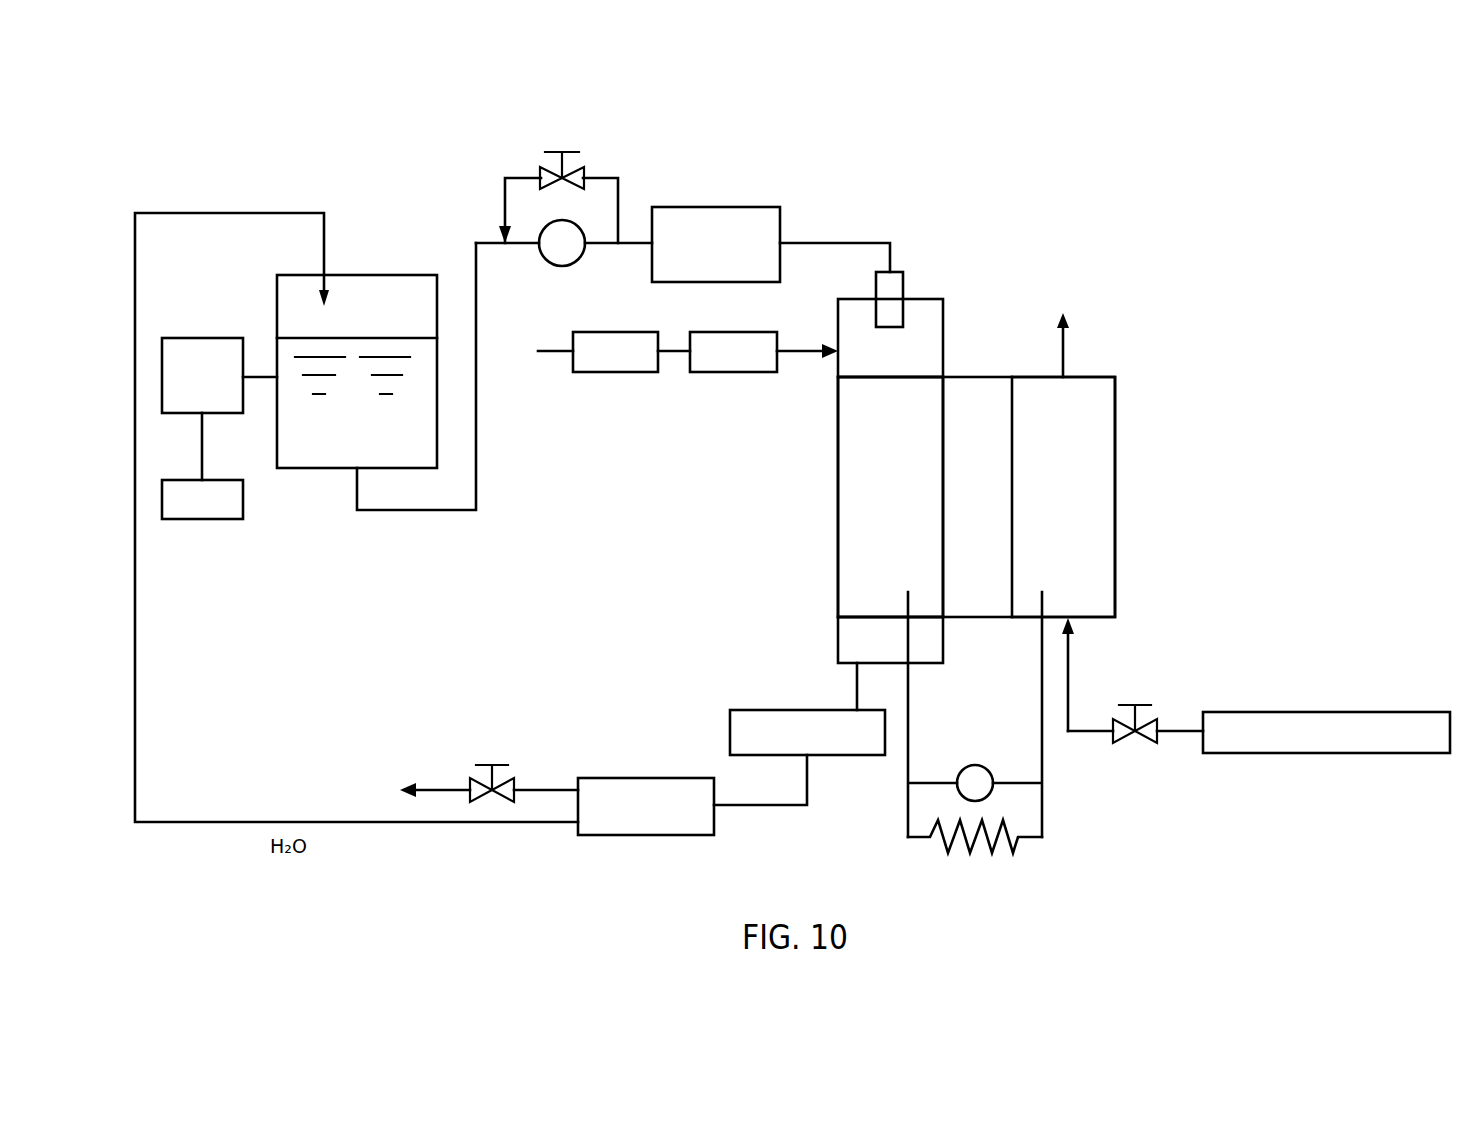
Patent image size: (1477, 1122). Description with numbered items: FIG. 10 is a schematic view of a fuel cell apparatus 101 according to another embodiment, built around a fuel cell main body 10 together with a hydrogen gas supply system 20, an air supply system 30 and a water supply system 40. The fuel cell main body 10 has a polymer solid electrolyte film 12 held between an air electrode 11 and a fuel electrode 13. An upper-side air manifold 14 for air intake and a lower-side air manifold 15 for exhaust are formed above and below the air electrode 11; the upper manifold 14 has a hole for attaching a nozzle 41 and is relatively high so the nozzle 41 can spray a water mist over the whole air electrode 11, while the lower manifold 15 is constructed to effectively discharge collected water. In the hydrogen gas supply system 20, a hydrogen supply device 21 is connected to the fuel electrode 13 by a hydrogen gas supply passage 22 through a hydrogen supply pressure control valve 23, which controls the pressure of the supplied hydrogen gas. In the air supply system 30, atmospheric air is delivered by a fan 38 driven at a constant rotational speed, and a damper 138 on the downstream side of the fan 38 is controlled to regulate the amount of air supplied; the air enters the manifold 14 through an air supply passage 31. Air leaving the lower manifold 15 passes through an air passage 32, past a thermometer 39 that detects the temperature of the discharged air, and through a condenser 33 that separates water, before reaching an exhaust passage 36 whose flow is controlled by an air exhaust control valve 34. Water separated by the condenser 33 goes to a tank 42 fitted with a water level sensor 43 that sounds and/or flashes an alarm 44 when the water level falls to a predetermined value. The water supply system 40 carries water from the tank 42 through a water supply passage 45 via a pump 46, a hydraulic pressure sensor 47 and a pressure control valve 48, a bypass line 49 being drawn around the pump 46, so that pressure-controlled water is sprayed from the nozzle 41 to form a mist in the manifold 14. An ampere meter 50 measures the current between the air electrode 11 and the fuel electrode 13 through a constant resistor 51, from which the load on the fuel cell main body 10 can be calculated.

The fuel cell main body 10 is at (1260, 411).
The air electrode 11 is at (838, 498).
The polymer solid electrolyte film 12 is at (965, 610).
The fuel electrode 13 is at (1100, 480).
The upper-side air manifold 14 is at (935, 299).
The lower-side air manifold 15 is at (838, 636).
The hydrogen gas supply system 20 is at (1186, 804).
The hydrogen supply device 21 is at (1365, 712).
The hydrogen gas supply passage 22 is at (1172, 731).
The hydrogen supply pressure control valve 23 is at (1140, 705).
The air supply system 30 is at (632, 488).
The air supply passage 31 is at (808, 351).
The air passage 32 is at (768, 805).
The condenser 33 is at (650, 778).
The air exhaust control valve 34 is at (498, 765).
The exhaust passage 36 is at (428, 790).
The fan 38 is at (612, 372).
The thermometer 39 is at (743, 710).
The water supply system 40 is at (448, 178).
The nozzle 41 is at (876, 283).
The tank 42 is at (355, 275).
The water level sensor 43 is at (200, 338).
The alarm 44 is at (198, 519).
The water supply passage 45 is at (408, 512).
The pump 46 is at (552, 265).
The hydraulic pressure sensor 47 is at (727, 207).
The pressure control valve 48 is at (565, 152).
The bypass pipe 49 is at (618, 178).
The ampere meter 50 is at (972, 765).
The resistor 51 is at (990, 852).
The fuel cell apparatus 101 is at (1155, 250).
The damper 138 is at (727, 372).